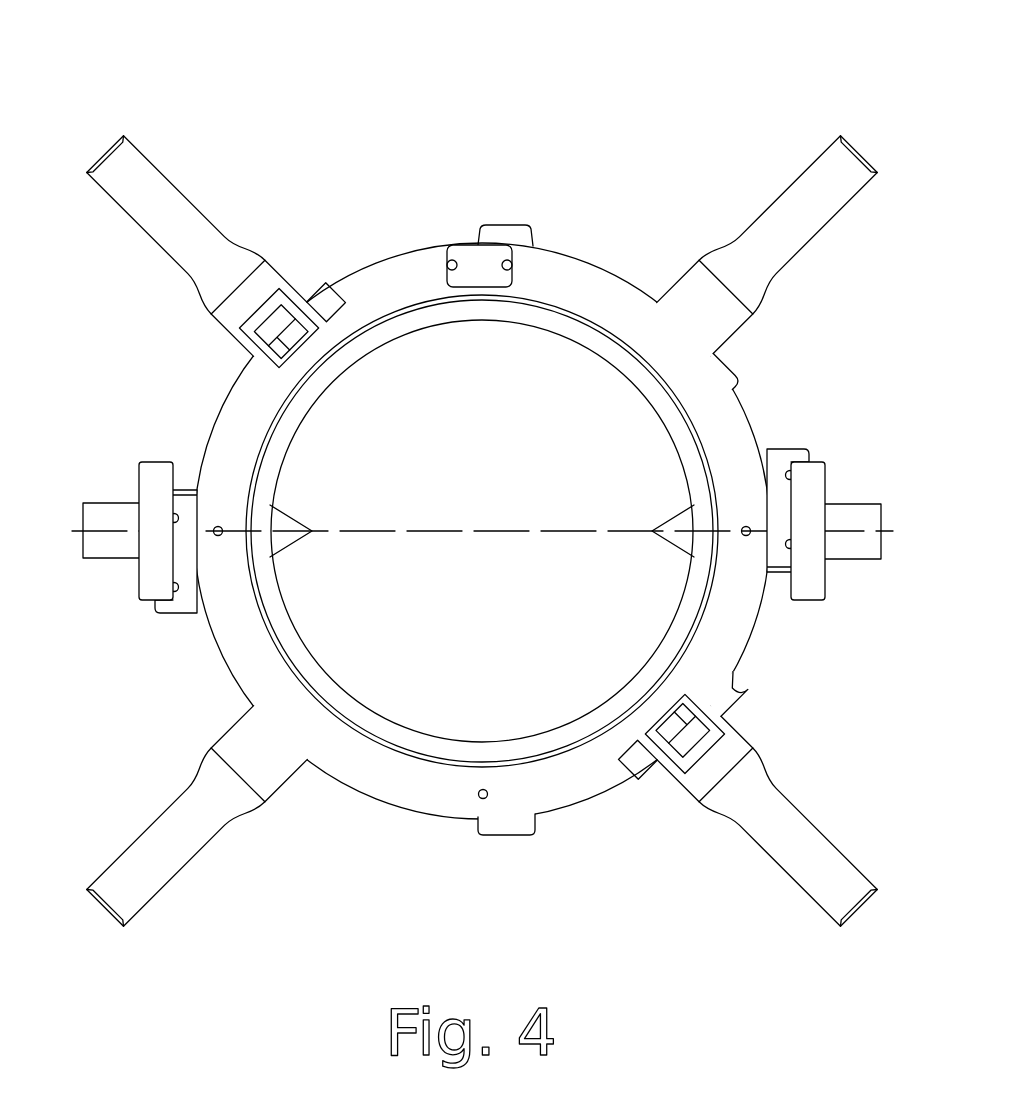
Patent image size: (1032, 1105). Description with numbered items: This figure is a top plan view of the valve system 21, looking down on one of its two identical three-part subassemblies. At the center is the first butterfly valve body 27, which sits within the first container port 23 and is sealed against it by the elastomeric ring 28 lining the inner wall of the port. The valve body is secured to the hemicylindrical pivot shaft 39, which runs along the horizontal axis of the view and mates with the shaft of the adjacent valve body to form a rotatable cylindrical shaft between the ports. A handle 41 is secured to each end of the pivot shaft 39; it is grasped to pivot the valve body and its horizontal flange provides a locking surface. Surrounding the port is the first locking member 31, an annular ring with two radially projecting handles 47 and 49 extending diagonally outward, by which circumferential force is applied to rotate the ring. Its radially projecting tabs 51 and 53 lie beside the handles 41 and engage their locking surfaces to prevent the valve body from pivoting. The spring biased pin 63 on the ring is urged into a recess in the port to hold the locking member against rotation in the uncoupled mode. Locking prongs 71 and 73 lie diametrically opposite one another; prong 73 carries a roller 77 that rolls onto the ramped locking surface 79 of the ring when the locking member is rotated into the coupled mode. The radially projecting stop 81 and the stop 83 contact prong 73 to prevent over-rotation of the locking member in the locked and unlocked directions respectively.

The valve system 21 is at (577, 96).
The first container port 23 is at (421, 749).
The first butterfly valve body 27 is at (607, 464).
The elastomeric ring 28 is at (655, 654).
The first locking member 31 is at (248, 400).
The pivot shaft 39 is at (110, 548).
The handle 41 is at (158, 480).
The handle 47 is at (194, 851).
The handle 49 is at (837, 199).
The radially projecting tab 51 is at (183, 613).
The radially projecting tab 53 is at (782, 447).
The spring biased pin 63 is at (468, 262).
The locking prong 71 is at (260, 302).
The locking prong 73 is at (708, 752).
The roller 77 is at (673, 738).
The locking surface 79 is at (618, 770).
The radially projecting stop 81 is at (745, 690).
The stop 83 is at (513, 837).